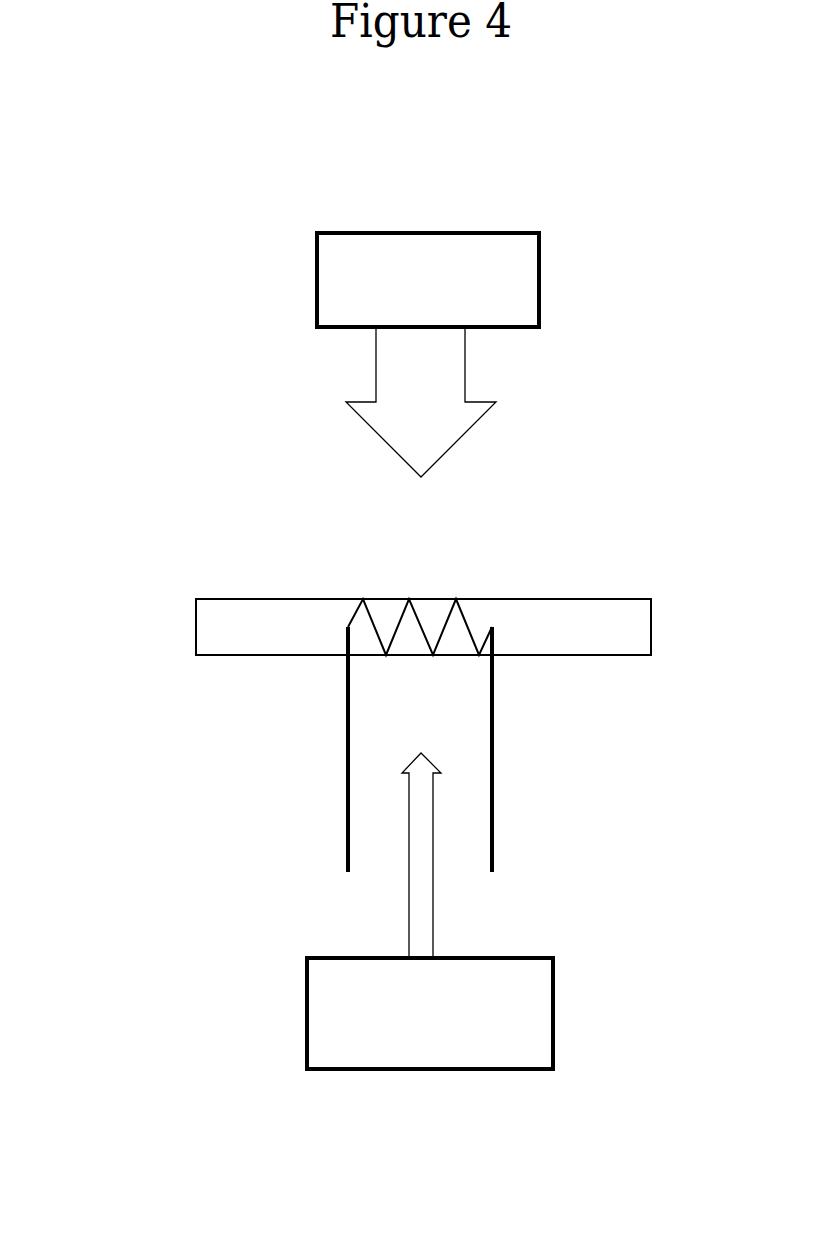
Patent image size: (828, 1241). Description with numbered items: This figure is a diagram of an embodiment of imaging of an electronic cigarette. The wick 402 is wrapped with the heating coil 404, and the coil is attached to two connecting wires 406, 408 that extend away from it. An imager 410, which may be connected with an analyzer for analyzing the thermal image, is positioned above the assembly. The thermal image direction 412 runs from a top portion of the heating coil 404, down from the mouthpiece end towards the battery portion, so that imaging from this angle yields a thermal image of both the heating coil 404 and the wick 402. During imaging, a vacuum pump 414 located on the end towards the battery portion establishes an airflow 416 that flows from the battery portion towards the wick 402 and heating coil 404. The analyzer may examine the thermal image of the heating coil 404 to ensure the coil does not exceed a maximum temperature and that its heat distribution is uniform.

The wick 402 is at (196, 628).
The coil 404 is at (420, 628).
The connecting wire 406 is at (348, 750).
The connecting wire 408 is at (492, 750).
The imager 410 is at (428, 233).
The thermal image direction 412 is at (465, 394).
The vacuum pump 414 is at (420, 1069).
The airflow 416 is at (433, 903).